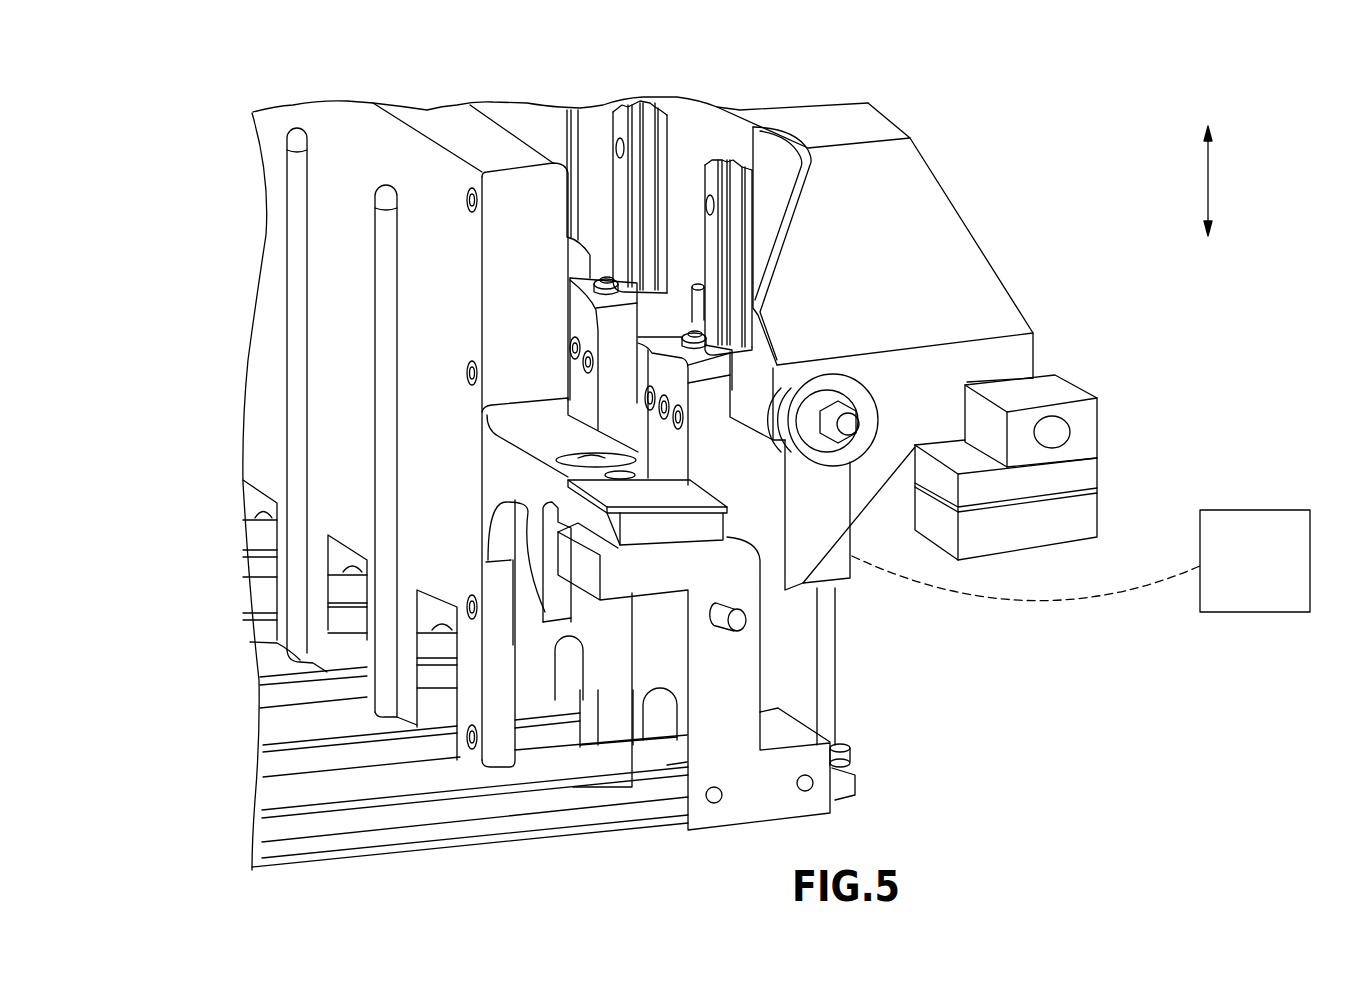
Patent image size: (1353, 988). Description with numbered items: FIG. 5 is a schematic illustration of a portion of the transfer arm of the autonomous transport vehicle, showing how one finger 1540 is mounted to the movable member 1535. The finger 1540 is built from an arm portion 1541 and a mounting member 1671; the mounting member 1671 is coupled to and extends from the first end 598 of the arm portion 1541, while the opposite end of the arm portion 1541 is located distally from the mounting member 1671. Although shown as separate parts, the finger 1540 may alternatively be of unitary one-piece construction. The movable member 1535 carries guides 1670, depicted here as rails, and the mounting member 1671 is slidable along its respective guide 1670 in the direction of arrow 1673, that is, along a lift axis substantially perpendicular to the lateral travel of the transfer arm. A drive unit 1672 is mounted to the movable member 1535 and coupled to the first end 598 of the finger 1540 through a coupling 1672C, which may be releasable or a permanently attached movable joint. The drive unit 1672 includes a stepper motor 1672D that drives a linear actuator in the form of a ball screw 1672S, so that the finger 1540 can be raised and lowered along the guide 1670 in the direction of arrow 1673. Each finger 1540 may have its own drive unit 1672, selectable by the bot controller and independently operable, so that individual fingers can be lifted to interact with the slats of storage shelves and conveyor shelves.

The finger 1540 is at (292, 788).
The arm portion 1541 is at (488, 828).
The first end 598 is at (607, 810).
The guide 1670 is at (733, 155).
The movable member 1535 is at (910, 163).
The arrow 1673 is at (1210, 187).
The stepper motor 1672D is at (1253, 510).
The drive unit 1672 is at (850, 585).
The ball screw 1672S is at (828, 678).
The coupling 1672C is at (850, 753).
The mounting member 1671 is at (742, 810).